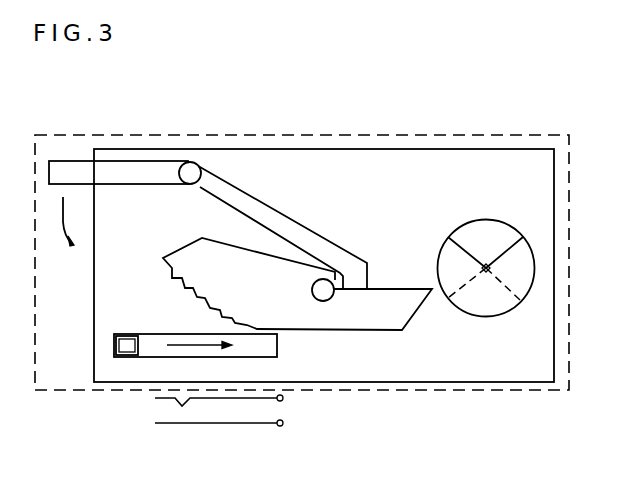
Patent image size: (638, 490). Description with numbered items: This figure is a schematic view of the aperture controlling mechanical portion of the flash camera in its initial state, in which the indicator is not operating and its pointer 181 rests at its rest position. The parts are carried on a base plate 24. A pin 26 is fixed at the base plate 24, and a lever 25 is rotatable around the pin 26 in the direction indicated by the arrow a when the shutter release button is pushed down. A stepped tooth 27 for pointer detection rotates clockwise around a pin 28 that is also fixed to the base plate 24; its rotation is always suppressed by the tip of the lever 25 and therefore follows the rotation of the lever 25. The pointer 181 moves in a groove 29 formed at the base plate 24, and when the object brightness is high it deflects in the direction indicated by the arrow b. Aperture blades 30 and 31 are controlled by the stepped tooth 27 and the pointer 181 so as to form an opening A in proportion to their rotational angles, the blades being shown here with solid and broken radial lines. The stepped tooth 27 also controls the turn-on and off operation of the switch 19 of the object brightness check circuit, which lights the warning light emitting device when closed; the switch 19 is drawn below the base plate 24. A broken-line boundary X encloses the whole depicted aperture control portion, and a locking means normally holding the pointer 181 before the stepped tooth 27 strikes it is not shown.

The switch 19 is at (228, 408).
The base plate 24 is at (324, 162).
The lever 25 is at (135, 172).
The pin 26 is at (195, 163).
The stepped tooth 27 is at (398, 313).
The pin 28 is at (331, 298).
The groove 29 is at (277, 345).
The aperture blade 30 is at (510, 247).
The aperture blade 31 is at (508, 288).
The pointer 181 is at (120, 355).
The opening A is at (485, 265).
The region X is at (567, 362).
The arrow a is at (62, 228).
The arrow b is at (183, 345).